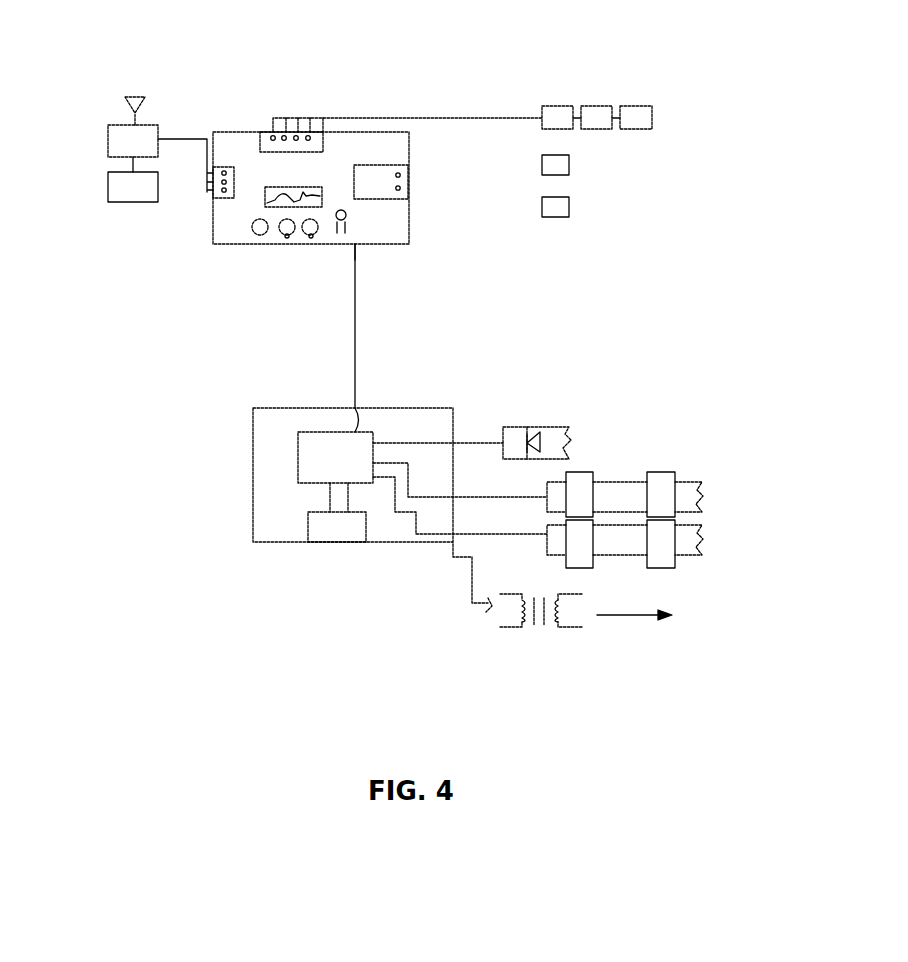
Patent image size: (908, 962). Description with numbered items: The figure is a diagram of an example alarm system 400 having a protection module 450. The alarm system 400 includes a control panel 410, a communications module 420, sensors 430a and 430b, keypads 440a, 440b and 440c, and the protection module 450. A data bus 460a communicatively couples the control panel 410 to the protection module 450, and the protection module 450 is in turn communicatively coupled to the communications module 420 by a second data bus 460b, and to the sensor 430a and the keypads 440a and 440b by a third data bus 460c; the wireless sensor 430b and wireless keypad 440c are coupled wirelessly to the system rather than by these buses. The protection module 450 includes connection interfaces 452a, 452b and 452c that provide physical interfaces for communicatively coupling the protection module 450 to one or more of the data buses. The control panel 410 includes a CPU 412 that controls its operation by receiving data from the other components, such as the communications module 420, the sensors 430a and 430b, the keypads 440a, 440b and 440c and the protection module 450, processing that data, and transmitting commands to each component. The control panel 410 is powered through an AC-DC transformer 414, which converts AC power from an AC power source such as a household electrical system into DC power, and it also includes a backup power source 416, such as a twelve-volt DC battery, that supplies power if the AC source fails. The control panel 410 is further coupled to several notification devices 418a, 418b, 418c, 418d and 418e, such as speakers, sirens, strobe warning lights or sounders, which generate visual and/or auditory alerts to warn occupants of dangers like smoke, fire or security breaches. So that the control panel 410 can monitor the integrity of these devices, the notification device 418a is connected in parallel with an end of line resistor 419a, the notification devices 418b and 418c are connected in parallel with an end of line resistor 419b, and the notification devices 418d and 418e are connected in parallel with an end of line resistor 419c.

The alarm system 400 is at (692, 51).
The control panel 410 is at (358, 495).
The CPU 412 is at (312, 440).
The AC-DC transformer 414 is at (497, 636).
The backup power source 416 is at (322, 538).
The notification device 418a is at (513, 433).
The notification device 418b is at (580, 485).
The notification device 418c is at (665, 485).
The notification device 418d is at (580, 545).
The notification device 418e is at (660, 545).
The end of line resistor 419a is at (572, 432).
The end of line resistor 419b is at (702, 485).
The end of line resistor 419c is at (702, 528).
The communications module 420 is at (122, 145).
The sensor 430a is at (548, 114).
The wireless sensor 430b is at (553, 168).
The keypad 440a is at (597, 117).
The keypad 440b is at (645, 118).
The wireless keypad 440c is at (553, 210).
The protection module 450 is at (243, 142).
The connection interface 452a is at (318, 140).
The connection interface 452b is at (212, 198).
The connection interface 452c is at (355, 246).
The data bus 460a is at (355, 316).
The second data bus 460b is at (183, 135).
The third data bus 460c is at (395, 117).